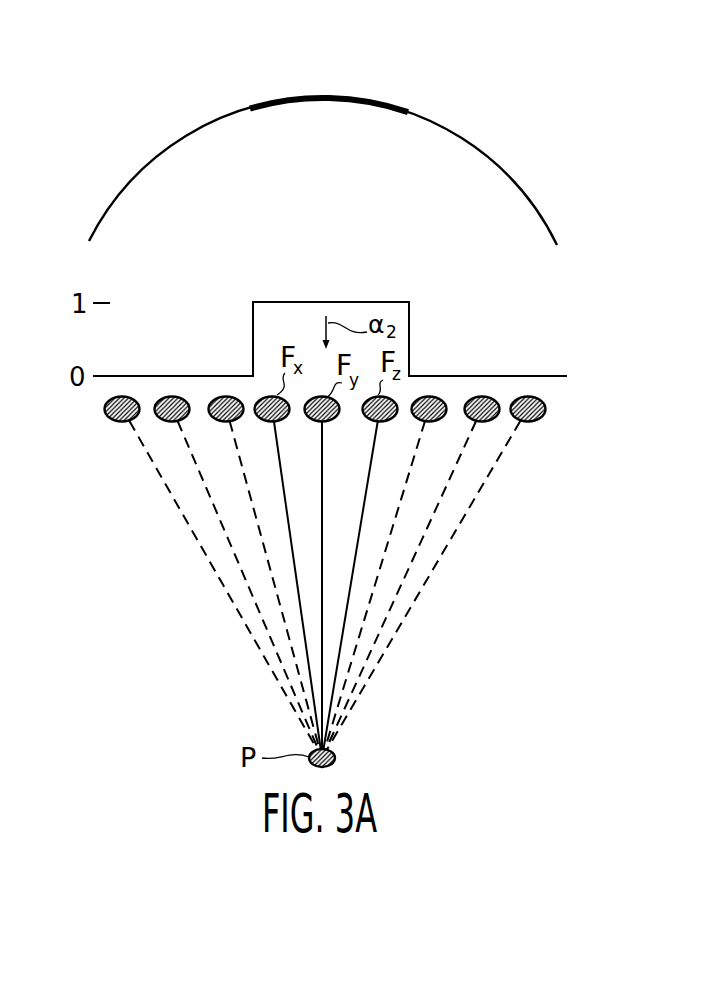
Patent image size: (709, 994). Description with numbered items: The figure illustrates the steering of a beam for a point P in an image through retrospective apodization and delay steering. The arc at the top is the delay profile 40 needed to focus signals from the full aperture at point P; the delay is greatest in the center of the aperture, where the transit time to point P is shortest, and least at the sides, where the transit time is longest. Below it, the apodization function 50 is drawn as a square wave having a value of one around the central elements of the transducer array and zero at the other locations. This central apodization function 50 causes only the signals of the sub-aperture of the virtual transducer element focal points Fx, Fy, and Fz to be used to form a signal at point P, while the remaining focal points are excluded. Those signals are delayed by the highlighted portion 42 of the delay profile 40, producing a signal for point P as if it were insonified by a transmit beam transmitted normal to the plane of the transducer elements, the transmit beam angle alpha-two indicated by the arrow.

The delay profile 40 is at (182, 138).
The highlighted portion 42 is at (290, 100).
The apodization function 50 is at (409, 337).